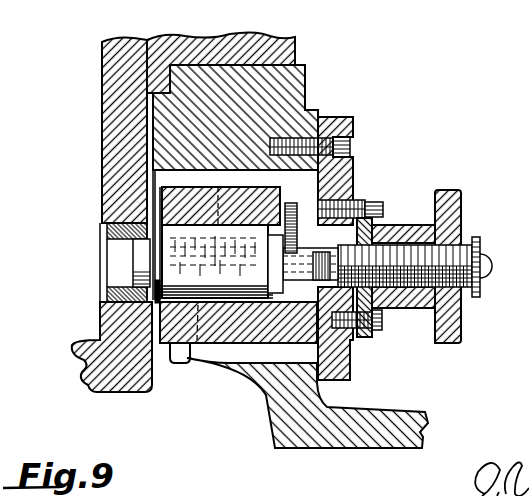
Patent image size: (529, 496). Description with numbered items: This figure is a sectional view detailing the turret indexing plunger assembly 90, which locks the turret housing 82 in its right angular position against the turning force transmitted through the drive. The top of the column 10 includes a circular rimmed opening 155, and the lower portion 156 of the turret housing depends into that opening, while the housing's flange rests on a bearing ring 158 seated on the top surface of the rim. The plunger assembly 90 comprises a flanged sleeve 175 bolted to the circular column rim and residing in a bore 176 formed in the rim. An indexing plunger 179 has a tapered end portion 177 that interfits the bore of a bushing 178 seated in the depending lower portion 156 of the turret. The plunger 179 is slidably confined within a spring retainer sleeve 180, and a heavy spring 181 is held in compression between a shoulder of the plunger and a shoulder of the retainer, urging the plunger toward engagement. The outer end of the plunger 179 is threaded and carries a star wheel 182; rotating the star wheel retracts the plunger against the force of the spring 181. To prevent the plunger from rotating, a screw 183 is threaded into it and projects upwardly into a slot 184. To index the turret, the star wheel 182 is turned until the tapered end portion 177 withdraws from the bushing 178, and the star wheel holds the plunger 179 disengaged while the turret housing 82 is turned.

The column 10 is at (399, 410).
The turret housing 82 is at (116, 49).
The plunger assembly 90 is at (362, 170).
The circular rimmed opening 155 is at (152, 113).
The lower portion of turret housing 156 is at (107, 320).
The bearing ring 158 is at (218, 36).
The flanged sleeve 175 is at (187, 361).
The bore 176 is at (246, 170).
The tapered end portion 177 is at (142, 244).
The bushing 178 is at (108, 236).
The indexing plunger 179 is at (303, 278).
The spring retainer sleeve 180 is at (245, 305).
The spring 181 is at (219, 183).
The star wheel 182 is at (449, 212).
The screw 183 is at (355, 185).
The slot 184 is at (299, 200).